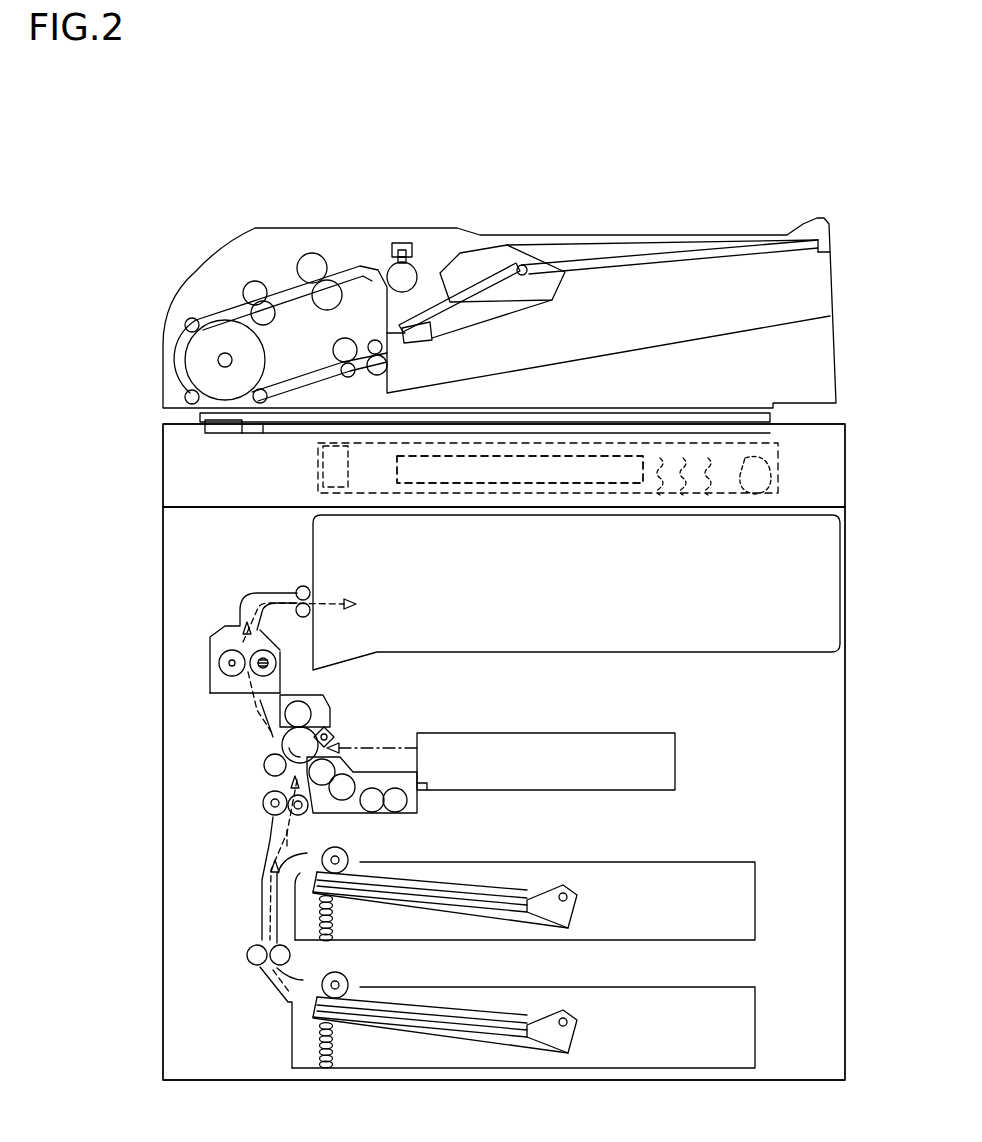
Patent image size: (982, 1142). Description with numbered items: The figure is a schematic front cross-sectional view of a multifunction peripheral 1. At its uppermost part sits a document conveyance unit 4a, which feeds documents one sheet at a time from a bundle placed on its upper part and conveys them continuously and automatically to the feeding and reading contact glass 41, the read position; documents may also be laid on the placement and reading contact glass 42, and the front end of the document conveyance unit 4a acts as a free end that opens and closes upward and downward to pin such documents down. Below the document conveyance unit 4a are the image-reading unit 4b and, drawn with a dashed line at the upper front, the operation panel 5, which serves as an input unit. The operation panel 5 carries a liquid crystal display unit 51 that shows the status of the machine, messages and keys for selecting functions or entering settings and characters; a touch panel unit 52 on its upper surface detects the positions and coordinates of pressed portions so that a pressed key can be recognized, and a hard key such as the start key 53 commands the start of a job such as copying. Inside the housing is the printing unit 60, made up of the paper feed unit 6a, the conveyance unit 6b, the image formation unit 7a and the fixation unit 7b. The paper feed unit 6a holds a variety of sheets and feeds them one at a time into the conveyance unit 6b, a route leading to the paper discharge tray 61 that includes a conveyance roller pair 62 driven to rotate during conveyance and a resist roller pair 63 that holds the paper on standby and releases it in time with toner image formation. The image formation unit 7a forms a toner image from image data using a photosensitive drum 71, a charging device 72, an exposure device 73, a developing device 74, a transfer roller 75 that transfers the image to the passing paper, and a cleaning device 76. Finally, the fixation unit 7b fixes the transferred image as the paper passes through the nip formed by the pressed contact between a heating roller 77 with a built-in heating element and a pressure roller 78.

The multifunction peripheral 1 is at (155, 257).
The document conveyance unit 4a is at (428, 250).
The image-reading unit 4b is at (850, 421).
The feeding and reading contact glass 41 is at (220, 427).
The placement and reading contact glass 42 is at (580, 430).
The operation panel 5 is at (318, 473).
The liquid crystal display unit 51 is at (495, 471).
The touch panel unit 52 is at (495, 471).
The start key 53 is at (752, 496).
The printing unit 60 is at (100, 515).
The paper discharge tray 61 is at (563, 648).
The conveyance roller pair 62 is at (252, 957).
The resist roller pair 63 is at (270, 806).
The paper feed unit 6a is at (767, 1025).
The conveyance unit 6b is at (260, 887).
The image formation unit 7a is at (420, 718).
The fixation unit 7b is at (205, 697).
The photosensitive drum 71 is at (290, 742).
The charging device 72 is at (333, 731).
The exposure device 73 is at (545, 791).
The developing device 74 is at (420, 808).
The transfer roller 75 is at (264, 762).
The cleaning device 76 is at (330, 693).
The heating roller 77 is at (282, 652).
The pressure roller 78 is at (217, 663).